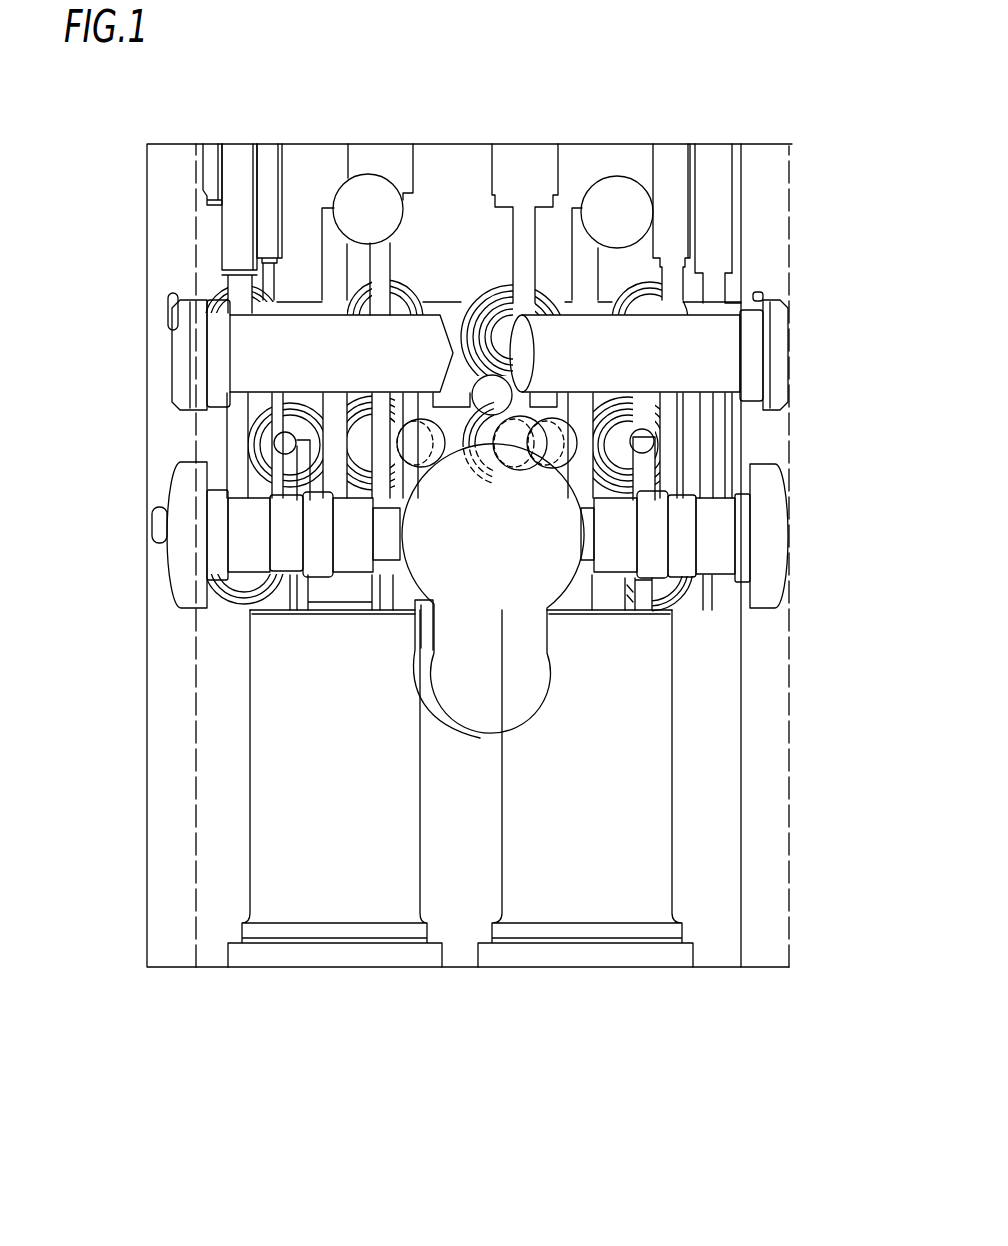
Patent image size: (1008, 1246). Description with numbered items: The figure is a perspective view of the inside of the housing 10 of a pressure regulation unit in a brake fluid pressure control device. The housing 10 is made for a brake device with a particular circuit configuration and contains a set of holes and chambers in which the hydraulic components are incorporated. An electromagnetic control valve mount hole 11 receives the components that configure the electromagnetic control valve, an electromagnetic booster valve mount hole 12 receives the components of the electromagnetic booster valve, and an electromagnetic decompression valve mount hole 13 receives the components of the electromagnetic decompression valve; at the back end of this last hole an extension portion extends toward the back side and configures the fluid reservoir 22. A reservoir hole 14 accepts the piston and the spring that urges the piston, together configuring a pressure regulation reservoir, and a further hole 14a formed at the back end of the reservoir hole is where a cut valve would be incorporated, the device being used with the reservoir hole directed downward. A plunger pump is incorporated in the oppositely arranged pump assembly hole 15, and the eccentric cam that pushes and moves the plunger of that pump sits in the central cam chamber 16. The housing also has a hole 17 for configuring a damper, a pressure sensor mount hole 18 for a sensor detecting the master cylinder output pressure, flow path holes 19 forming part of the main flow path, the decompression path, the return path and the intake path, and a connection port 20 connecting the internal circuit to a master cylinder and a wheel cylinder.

The housing 10 is at (161, 155).
The electromagnetic control valve mount hole 11 is at (242, 597).
The electromagnetic booster valve mount hole 12 is at (362, 290).
The electromagnetic decompression valve mount hole 13 is at (358, 455).
The reservoir hole 14 is at (325, 888).
The hole 14a is at (337, 592).
The pump assembly hole 15 is at (238, 538).
The cam chamber 16 is at (503, 566).
The hole for configuring a damper 17 is at (253, 352).
The pressure sensor mount hole 18 is at (373, 600).
The flow path holes 19 is at (500, 245).
The connection port 20 is at (215, 152).
The fluid reservoir 22 is at (578, 488).